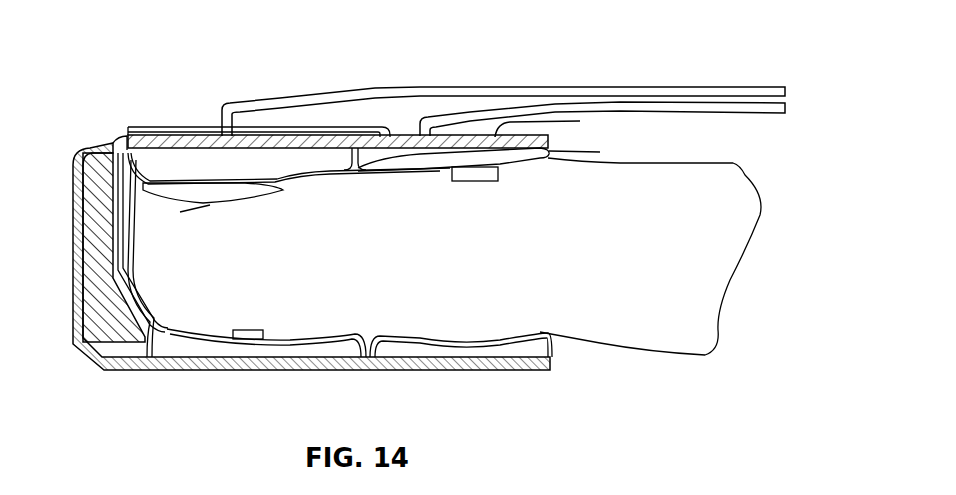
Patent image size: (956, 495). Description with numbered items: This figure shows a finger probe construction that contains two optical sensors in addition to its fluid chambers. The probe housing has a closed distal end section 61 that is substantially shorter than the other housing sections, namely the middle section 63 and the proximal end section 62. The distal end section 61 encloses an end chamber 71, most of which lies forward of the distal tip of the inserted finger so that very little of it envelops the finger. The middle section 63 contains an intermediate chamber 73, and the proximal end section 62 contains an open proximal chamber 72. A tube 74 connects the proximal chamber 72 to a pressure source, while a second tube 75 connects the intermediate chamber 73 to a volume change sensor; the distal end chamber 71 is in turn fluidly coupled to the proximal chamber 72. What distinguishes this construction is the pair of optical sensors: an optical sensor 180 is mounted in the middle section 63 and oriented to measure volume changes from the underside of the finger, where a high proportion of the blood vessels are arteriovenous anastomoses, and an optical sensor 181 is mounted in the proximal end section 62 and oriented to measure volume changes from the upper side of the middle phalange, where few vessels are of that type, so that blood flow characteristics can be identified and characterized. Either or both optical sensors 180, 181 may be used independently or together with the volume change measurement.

The closed distal end section 61 is at (92, 146).
The end chamber 71 is at (110, 140).
The middle section 63 is at (155, 138).
The intermediate chamber 73 is at (297, 162).
The second tube 75 is at (505, 87).
The tube 74 is at (632, 110).
The proximal end section 62 is at (578, 126).
The proximal chamber 72 is at (600, 152).
The optical sensor 181 is at (465, 182).
The optical sensor 180 is at (250, 330).